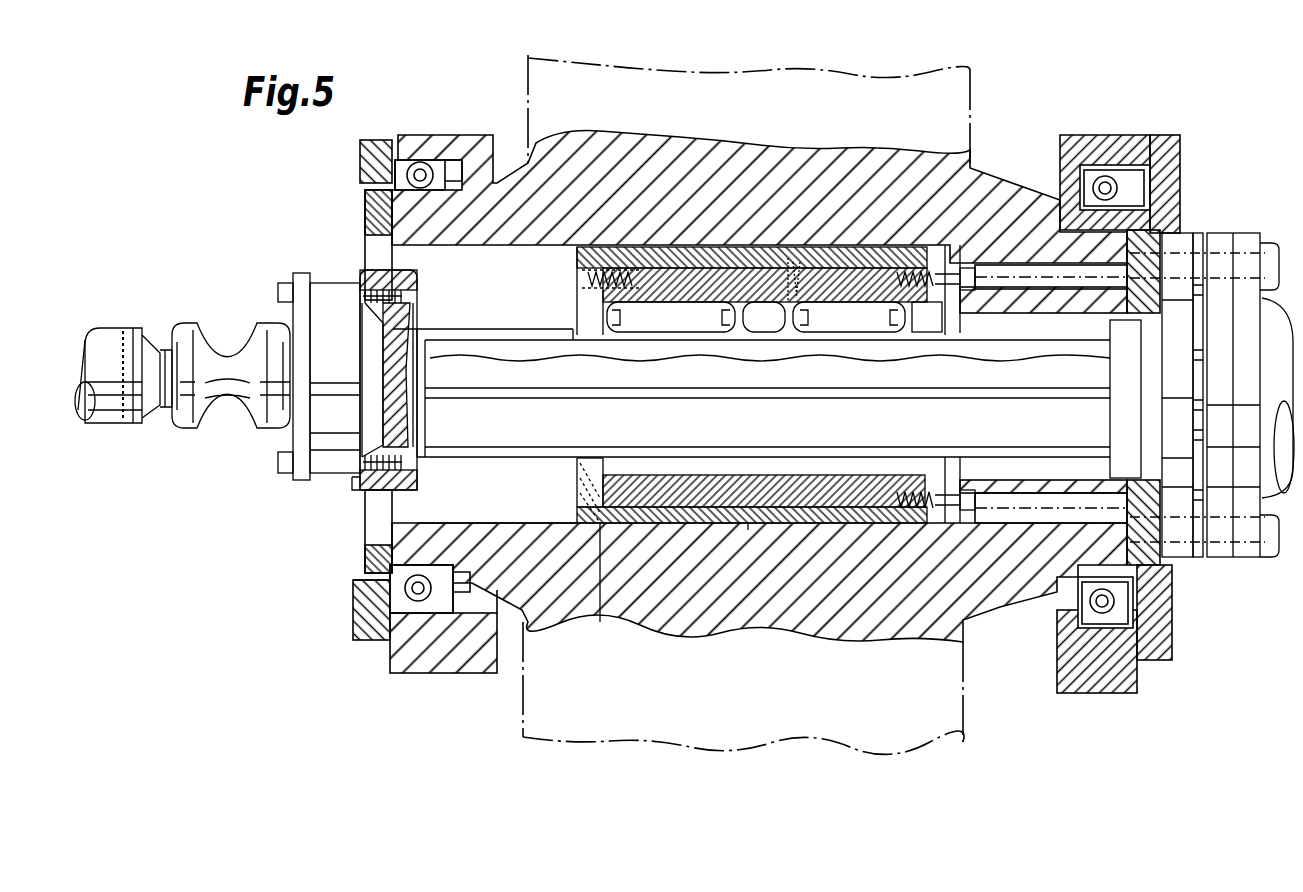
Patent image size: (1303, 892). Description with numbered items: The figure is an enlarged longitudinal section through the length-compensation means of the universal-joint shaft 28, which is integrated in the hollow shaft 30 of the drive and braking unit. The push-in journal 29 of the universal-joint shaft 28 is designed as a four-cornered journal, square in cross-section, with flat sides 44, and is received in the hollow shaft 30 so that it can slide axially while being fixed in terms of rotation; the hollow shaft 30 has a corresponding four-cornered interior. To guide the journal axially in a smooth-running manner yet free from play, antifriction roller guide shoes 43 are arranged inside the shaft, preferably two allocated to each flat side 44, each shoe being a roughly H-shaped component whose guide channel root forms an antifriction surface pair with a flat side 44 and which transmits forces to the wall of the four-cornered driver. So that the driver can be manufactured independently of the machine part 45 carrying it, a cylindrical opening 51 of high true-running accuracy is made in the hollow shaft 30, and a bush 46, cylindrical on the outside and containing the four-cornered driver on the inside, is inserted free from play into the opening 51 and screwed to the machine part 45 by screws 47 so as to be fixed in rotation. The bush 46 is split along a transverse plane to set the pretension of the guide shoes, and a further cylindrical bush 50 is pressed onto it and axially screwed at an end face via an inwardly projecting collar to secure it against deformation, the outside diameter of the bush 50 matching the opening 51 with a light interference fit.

The universal-joint shaft 28 is at (110, 335).
The push-in journal 29 is at (478, 323).
The hollow shaft 30 is at (623, 552).
The antifriction roller guide shoe 43 is at (847, 322).
The flat side 44 is at (535, 378).
The machine part 45 is at (967, 723).
The bush 46 is at (730, 493).
The screw 47 is at (945, 505).
The cylindrical bush 50 is at (748, 530).
The cylindrical opening 51 is at (500, 518).